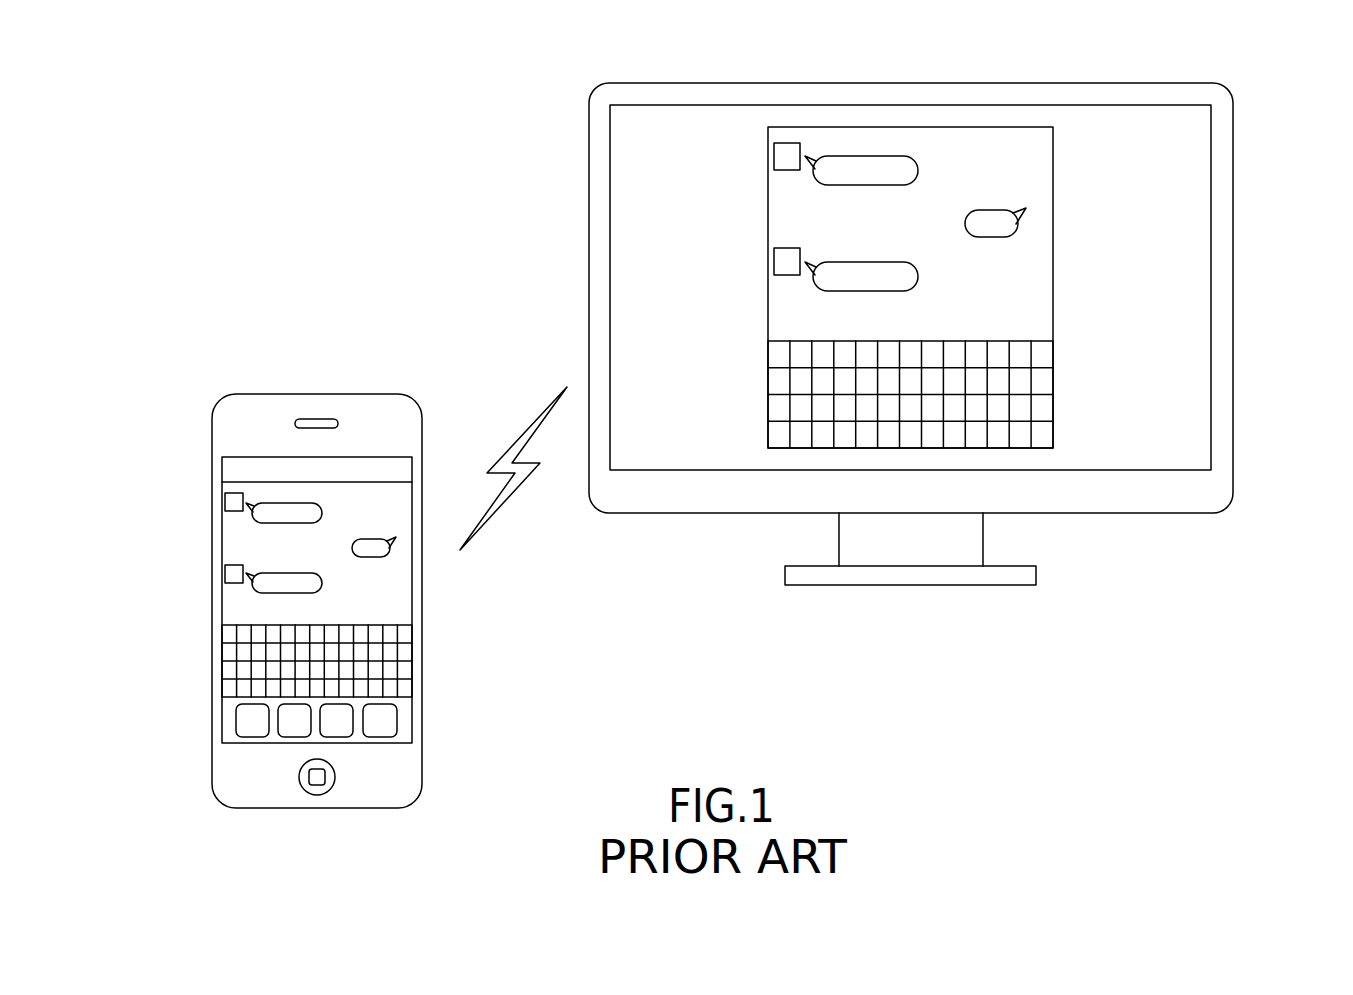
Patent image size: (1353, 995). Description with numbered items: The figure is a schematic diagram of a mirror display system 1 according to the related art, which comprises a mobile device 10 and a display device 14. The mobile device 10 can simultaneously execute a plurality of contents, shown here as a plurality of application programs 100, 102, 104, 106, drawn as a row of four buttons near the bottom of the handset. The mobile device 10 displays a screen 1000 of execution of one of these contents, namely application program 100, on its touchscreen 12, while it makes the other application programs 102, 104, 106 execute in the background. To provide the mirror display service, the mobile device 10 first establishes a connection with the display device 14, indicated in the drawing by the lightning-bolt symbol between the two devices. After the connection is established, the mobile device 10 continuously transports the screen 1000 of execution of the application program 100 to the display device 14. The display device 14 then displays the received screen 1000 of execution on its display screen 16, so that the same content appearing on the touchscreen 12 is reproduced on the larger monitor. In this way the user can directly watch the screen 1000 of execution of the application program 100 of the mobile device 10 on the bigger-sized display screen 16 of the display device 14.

The mirror display system 1 is at (729, 39).
The mobile device 10 is at (290, 400).
The touchscreen 12 is at (423, 598).
The display device 14 is at (1134, 87).
The display screen 16 is at (1221, 285).
The application program 100 is at (250, 737).
The application program 102 is at (294, 737).
The application program 104 is at (338, 737).
The application program 106 is at (382, 737).
The screen of execution 1000 is at (244, 467).